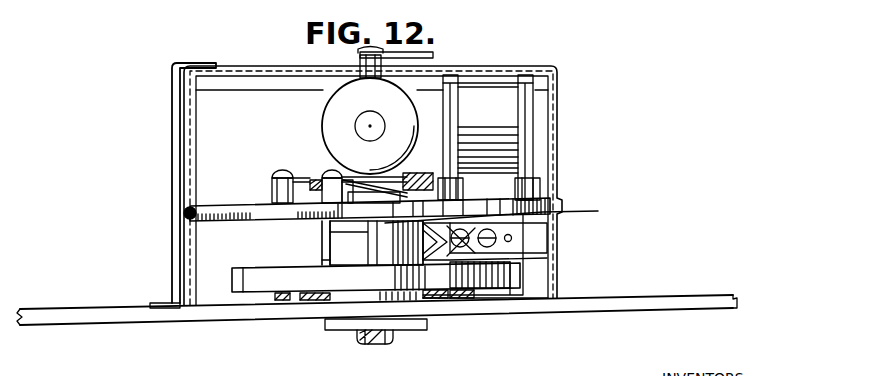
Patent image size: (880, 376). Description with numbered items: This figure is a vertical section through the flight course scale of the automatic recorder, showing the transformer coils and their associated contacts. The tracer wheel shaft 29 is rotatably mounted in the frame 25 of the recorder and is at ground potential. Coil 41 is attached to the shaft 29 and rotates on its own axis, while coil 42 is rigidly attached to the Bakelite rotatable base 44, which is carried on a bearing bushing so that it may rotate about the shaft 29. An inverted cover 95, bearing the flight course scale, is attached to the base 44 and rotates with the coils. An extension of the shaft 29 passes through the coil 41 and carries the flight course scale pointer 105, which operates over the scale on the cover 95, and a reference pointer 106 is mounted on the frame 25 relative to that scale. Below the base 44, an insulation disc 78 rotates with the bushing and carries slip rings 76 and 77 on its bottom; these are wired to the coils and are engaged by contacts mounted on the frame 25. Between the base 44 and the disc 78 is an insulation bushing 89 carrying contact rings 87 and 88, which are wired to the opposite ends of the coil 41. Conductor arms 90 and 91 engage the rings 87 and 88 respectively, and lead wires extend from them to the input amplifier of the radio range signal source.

The frame 25 is at (594, 305).
The shaft 29 is at (357, 345).
The coil 41 is at (327, 120).
The coil 42 is at (503, 125).
The rotatable base 44 is at (517, 208).
The slip ring 76 is at (284, 300).
The slip ring 77 is at (307, 303).
The insulation disc 78 is at (260, 278).
The contact ring 87 is at (322, 223).
The contact ring 88 is at (325, 258).
The insulation bushing 89 is at (318, 238).
The conductor arm 90 is at (520, 252).
The conductor arm 91 is at (502, 214).
The cover 95 is at (187, 168).
The flight course scale pointer 105 is at (433, 55).
The reference pointer 106 is at (172, 140).